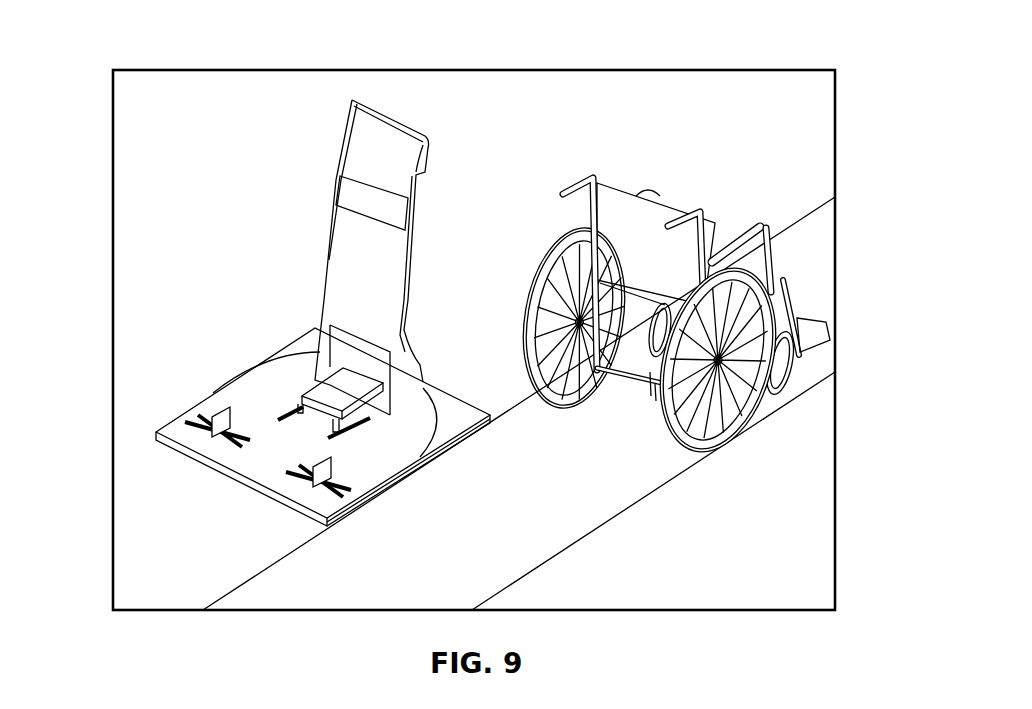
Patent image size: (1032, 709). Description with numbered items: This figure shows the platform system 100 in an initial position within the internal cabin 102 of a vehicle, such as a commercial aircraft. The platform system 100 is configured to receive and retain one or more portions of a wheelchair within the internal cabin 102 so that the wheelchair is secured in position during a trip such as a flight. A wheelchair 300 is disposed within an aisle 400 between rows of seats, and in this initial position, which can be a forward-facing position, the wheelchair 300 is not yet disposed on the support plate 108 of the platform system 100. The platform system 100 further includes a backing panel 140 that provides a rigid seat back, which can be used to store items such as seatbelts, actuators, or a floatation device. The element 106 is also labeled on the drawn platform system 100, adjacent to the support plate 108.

The platform system 100 is at (153, 285).
The internal cabin 102 is at (795, 117).
The platform edge 106 is at (460, 418).
The support plate 108 is at (373, 447).
The backing panel 140 is at (388, 108).
The wheelchair 300 is at (773, 260).
The aisle 400 is at (535, 538).